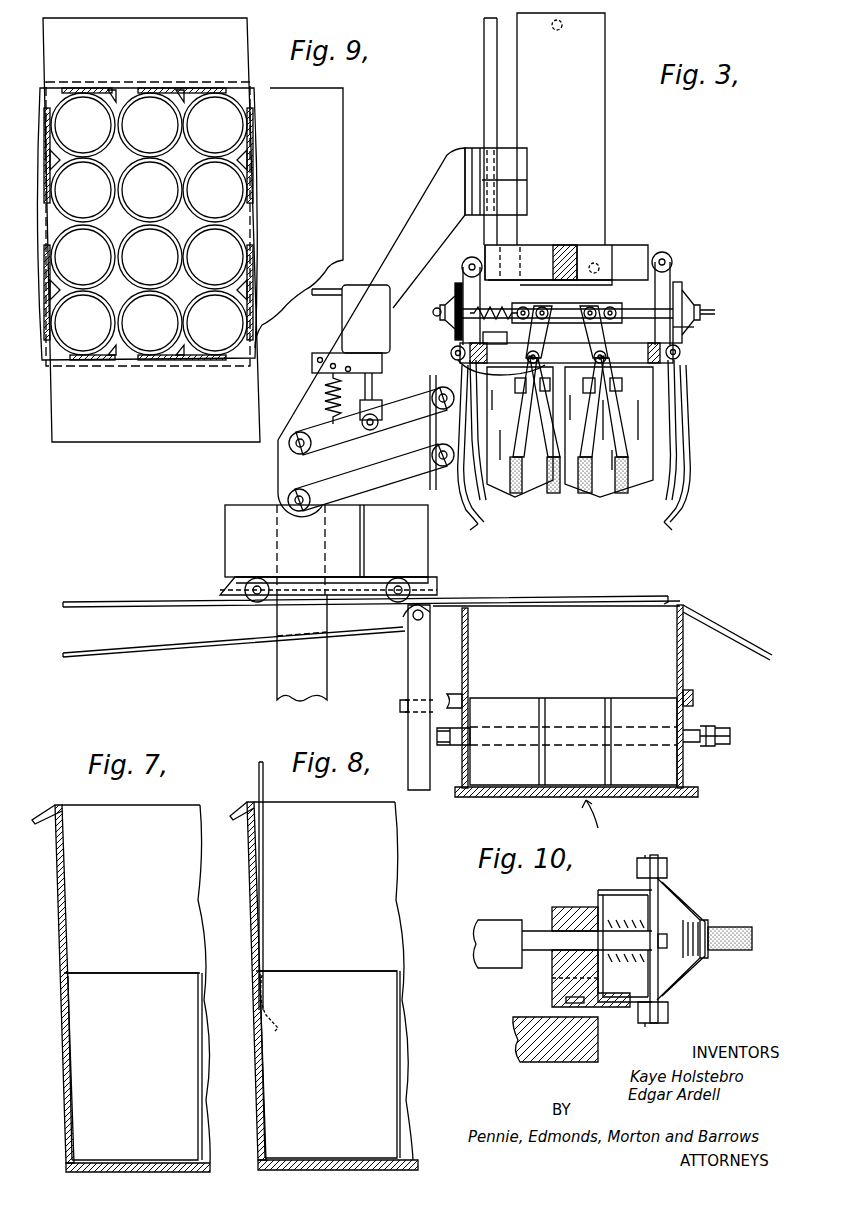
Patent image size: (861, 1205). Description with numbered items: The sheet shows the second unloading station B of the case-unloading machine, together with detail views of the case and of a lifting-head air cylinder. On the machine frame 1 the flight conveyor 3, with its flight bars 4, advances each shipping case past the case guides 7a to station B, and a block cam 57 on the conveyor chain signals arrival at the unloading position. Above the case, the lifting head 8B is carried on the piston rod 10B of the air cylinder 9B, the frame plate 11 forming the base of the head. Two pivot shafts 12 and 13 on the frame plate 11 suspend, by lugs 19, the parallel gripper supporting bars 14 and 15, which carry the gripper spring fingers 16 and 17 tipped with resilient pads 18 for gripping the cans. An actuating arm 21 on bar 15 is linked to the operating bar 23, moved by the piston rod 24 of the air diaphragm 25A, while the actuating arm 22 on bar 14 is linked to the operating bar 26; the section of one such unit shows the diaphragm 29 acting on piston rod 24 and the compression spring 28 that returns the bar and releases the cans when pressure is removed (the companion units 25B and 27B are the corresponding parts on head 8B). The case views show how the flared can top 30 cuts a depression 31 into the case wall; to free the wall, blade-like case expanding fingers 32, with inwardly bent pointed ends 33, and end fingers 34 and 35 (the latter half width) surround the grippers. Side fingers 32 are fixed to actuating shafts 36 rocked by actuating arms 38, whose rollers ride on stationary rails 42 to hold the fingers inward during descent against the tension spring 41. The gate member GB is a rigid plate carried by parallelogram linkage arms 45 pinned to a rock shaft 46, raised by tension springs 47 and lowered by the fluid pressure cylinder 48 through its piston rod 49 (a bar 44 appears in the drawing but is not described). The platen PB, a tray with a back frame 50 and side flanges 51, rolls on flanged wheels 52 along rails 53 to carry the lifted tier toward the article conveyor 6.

In FIG. 3, the frame 1 is at (412, 186).
In FIG. 3, the flight conveyor 3 is at (712, 728).
In FIG. 3, the flight bars 4 is at (626, 748).
In FIG. 3, the article conveyor 6 is at (166, 600).
In FIG. 3, the case guides 7a is at (450, 694).
In FIG. 3, the lifting head 8B is at (704, 282).
In FIG. 3, the air cylinder 9B is at (605, 132).
In FIG. 3, the piston rod 10B is at (600, 272).
In FIG. 3, the frame plate 11 is at (655, 372).
In FIG. 10, the frame plate 11 is at (528, 1025).
In FIG. 3, the pivot shaft 12 is at (608, 355).
In FIG. 3, the pivot shaft 13 is at (456, 368).
In FIG. 3, the gripper supporting bar 14 is at (543, 392).
In FIG. 3, the gripper supporting bar 15 is at (518, 392).
In FIG. 3, the gripper spring finger 16 is at (556, 442).
In FIG. 3, the gripper spring finger 17 is at (514, 436).
In FIG. 3, the resilient pads 18 is at (520, 494).
In FIG. 3, the lugs 19 is at (594, 358).
In FIG. 3, the actuating arm 21 is at (545, 330).
In FIG. 3, the actuating arm 22 is at (548, 318).
In FIG. 3, the operating bar 23 is at (600, 302).
In FIG. 10, the operating bar 23 is at (484, 914).
In FIG. 3, the piston rod 24 is at (690, 320).
In FIG. 10, the piston rod 24 is at (536, 931).
In FIG. 10, the air operated diaphragm 25A is at (660, 905).
In FIG. 3, the diaphragm actuator 25B is at (708, 300).
In FIG. 3, the operating bar 26 is at (518, 308).
In FIG. 3, the plate 27B is at (455, 290).
In FIG. 10, the compression spring 28 is at (612, 920).
In FIG. 10, the diaphragm 29 is at (672, 915).
In FIG. 7, the flared top 30 is at (200, 975).
In FIG. 8, the flared top 30 is at (329, 1064).
In FIG. 7, the depression 31 is at (70, 973).
In FIG. 8, the depression 31 is at (260, 971).
In FIG. 9, the case expanding finger 32 is at (44, 188).
In FIG. 3, the case expanding finger 32 is at (465, 474).
In FIG. 8, the case expanding finger 32 is at (266, 838).
In FIG. 9, the inwardly bent lower end 33 is at (166, 96).
In FIG. 3, the inwardly bent lower end 33 is at (588, 507).
In FIG. 8, the inwardly bent lower end 33 is at (280, 1020).
In FIG. 9, the end expanding finger 34 is at (150, 88).
In FIG. 9, the half-width end finger 35 is at (84, 88).
In FIG. 3, the actuating shaft 36 is at (451, 352).
In FIG. 3, the actuating arm 38 is at (462, 282).
In FIG. 3, the tension spring 41 is at (524, 290).
In FIG. 3, the rail 42 is at (478, 440).
In FIG. 3, the rod 44 is at (484, 88).
In FIG. 3, the parallelogram linkage arm 45 is at (338, 452).
In FIG. 3, the actuating rock shaft 46 is at (296, 436).
In FIG. 3, the tension spring 47 is at (326, 388).
In FIG. 3, the fluid pressure cylinder 48 is at (390, 292).
In FIG. 3, the piston rod 49 is at (372, 388).
In FIG. 3, the frame 50 is at (437, 580).
In FIG. 3, the flanges 51 is at (380, 578).
In FIG. 3, the flanged wheels 52 is at (395, 603).
In FIG. 3, the rails 53 is at (664, 596).
In FIG. 3, the block cam 57 is at (730, 734).
In FIG. 3, the gate member GB is at (430, 436).
In FIG. 3, the platen PB is at (332, 572).
In FIG. 3, the unloading station B is at (599, 819).